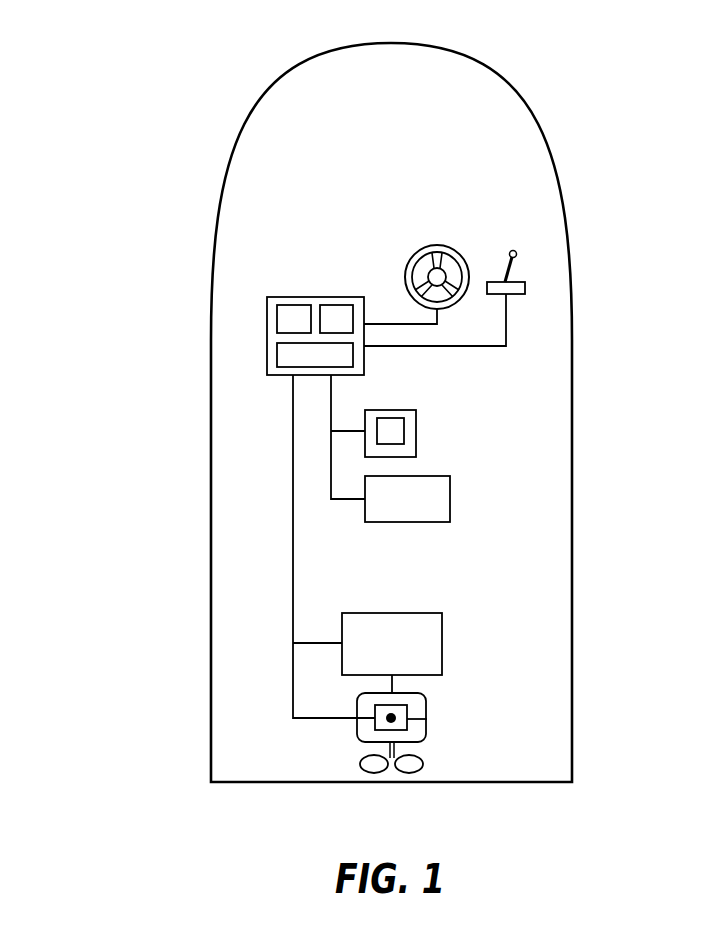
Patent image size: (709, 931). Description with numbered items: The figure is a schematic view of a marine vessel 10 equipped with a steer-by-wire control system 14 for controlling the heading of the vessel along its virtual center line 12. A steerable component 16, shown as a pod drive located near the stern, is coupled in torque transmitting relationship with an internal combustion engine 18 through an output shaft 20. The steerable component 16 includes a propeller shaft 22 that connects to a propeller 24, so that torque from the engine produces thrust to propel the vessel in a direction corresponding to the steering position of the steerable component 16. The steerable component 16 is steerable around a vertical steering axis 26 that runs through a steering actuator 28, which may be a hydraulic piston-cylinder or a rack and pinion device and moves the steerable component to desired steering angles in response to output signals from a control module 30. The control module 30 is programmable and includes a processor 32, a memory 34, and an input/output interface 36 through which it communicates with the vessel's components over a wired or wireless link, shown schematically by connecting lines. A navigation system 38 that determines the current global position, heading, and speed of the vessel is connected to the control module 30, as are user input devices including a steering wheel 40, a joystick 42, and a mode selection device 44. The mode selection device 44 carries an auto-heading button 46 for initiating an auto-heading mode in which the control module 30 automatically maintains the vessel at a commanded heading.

The marine vessel 10 is at (573, 293).
The virtual center line 12 is at (198, 426).
The control system 14 is at (503, 183).
The steerable component 16 is at (436, 708).
The internal combustion engine 18 is at (442, 632).
The output shaft 20 is at (392, 685).
The propeller shaft 22 is at (397, 749).
The propeller 24 is at (417, 763).
The steering axis 26 is at (392, 721).
The steering actuator 28 is at (427, 719).
The control module 30 is at (325, 297).
The processor 32 is at (292, 305).
The memory 34 is at (337, 305).
The input/output (I/O) interface 36 is at (277, 356).
The navigation system 38 is at (450, 497).
The steering wheel 40 is at (433, 246).
The joystick 42 is at (516, 278).
The mode selection device 44 is at (416, 428).
The auto-heading button 46 is at (393, 418).